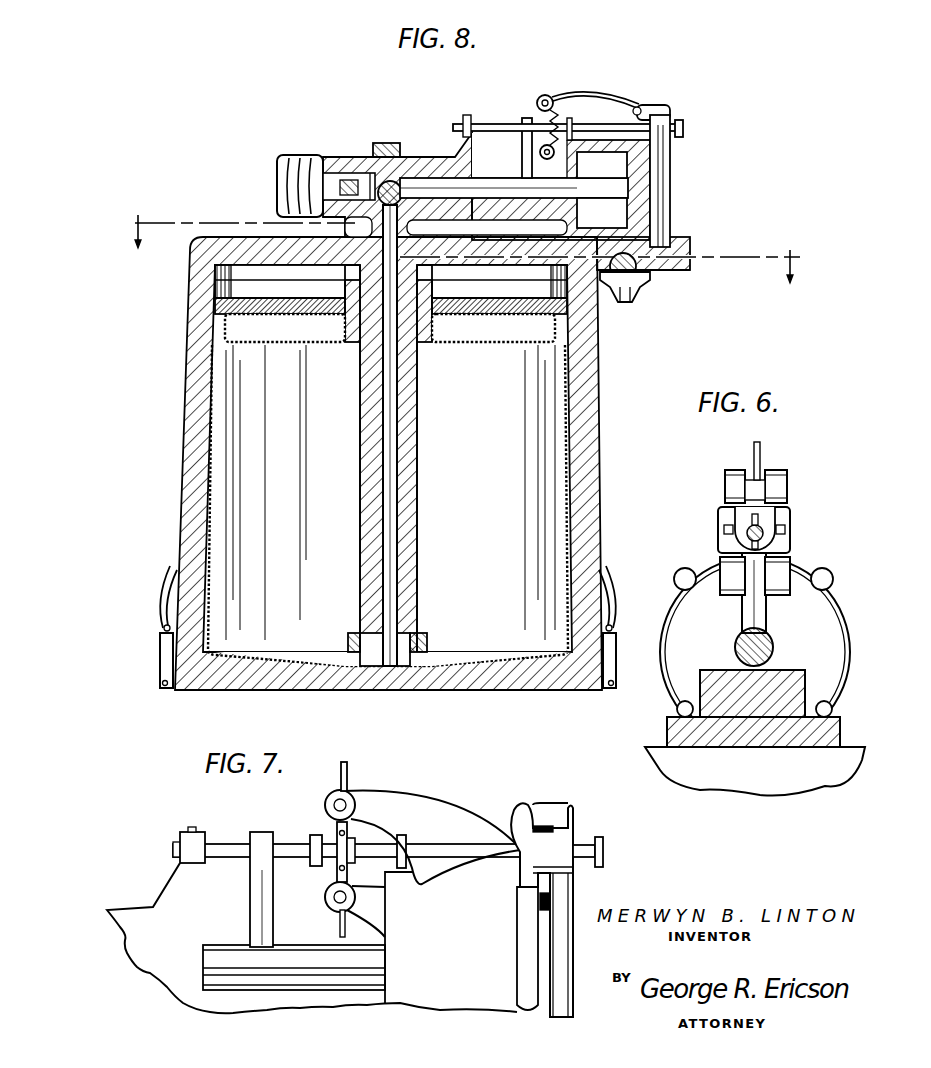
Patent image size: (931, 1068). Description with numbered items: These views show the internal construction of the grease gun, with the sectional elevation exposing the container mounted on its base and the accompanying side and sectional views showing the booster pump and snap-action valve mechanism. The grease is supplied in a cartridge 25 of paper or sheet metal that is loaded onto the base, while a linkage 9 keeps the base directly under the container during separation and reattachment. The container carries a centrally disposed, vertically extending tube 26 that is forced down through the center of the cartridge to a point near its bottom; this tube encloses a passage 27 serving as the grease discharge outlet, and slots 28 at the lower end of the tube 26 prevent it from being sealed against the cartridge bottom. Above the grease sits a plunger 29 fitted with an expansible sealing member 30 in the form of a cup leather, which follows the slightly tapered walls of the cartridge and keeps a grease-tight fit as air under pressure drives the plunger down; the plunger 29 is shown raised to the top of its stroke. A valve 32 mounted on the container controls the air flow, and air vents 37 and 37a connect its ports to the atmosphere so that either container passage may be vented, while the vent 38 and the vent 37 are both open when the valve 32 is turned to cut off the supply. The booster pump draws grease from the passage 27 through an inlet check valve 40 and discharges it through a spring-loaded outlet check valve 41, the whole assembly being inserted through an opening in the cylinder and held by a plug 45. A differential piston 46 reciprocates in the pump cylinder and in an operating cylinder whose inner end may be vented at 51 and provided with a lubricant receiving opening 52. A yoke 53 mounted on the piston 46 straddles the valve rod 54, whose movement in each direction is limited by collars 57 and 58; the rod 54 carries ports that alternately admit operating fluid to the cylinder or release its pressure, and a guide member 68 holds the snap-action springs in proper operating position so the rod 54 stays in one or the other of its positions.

In FIG. 8, the linkage 9 is at (466, 237).
In FIG. 8, the grease cartridge 25 is at (208, 487).
In FIG. 8, the tube 26 is at (415, 493).
In FIG. 8, the passage 27 is at (392, 470).
In FIG. 8, the slots 28 is at (365, 643).
In FIG. 8, the plunger 29 is at (353, 323).
In FIG. 8, the expansible sealing member 30 is at (215, 327).
In FIG. 8, the valve 32 is at (647, 278).
In FIG. 8, the air vent 37 is at (622, 282).
In FIG. 8, the air vent 37a is at (622, 295).
In FIG. 8, the vent 38 is at (670, 183).
In FIG. 8, the inlet check valve 40 is at (383, 185).
In FIG. 8, the outlet check valve 41 is at (367, 170).
In FIG. 8, the plug 45 is at (398, 150).
In FIG. 8, the differential piston 46 is at (597, 192).
In FIG. 8, the vent 51 is at (568, 150).
In FIG. 8, the lubricant receiving opening 52 is at (602, 212).
In FIG. 8, the yoke 53 is at (528, 160).
In FIG. 8, the valve rod 54 is at (497, 114).
In FIG. 8, the collar 57 is at (618, 120).
In FIG. 8, the collar 58 is at (683, 124).
In FIG. 7, the guide member 68 is at (349, 772).